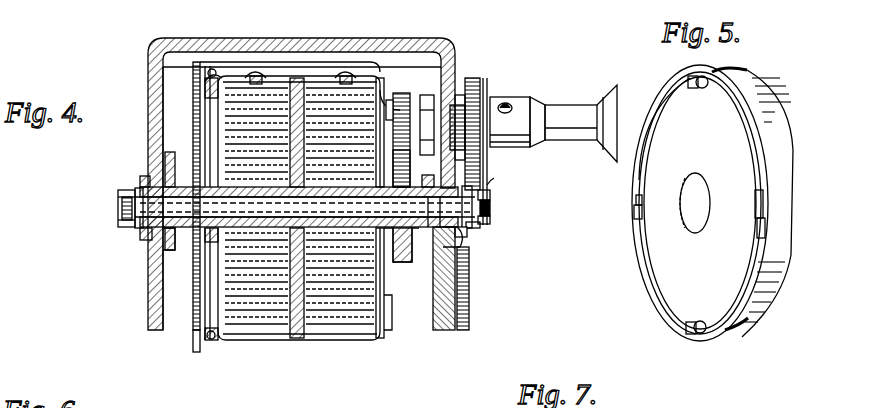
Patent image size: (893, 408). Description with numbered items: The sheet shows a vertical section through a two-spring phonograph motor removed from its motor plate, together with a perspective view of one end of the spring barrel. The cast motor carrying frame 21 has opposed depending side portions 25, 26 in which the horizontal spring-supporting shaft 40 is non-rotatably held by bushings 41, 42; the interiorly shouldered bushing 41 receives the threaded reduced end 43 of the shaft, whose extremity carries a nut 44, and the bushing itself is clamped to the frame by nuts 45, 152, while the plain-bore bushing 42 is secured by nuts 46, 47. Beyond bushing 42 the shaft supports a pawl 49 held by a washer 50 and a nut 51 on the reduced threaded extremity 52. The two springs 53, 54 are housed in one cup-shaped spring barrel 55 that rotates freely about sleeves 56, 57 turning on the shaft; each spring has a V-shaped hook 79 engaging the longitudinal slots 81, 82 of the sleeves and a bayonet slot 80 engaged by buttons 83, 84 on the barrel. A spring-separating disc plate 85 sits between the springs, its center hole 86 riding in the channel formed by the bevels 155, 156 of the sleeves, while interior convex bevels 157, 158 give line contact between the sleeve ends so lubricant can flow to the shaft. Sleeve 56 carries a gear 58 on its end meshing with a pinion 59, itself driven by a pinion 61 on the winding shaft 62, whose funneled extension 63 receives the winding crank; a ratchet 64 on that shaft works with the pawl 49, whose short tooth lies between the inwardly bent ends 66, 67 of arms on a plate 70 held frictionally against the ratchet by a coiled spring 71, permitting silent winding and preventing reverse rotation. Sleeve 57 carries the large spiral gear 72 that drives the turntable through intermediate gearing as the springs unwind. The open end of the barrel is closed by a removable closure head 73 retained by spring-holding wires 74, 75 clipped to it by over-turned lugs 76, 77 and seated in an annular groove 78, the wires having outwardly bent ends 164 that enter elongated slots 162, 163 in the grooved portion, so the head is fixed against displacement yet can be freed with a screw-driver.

In FIG. 4, the motor carrying frame 21 is at (318, 40).
In FIG. 4, the depending side portion 25 is at (153, 118).
In FIG. 4, the depending side portion 26 is at (452, 72).
In FIG. 4, the spring-supporting shaft 40 is at (400, 245).
In FIG. 4, the bushing 41 is at (150, 226).
In FIG. 4, the bushing 42 is at (458, 240).
In FIG. 4, the threaded reduced end 43 is at (133, 224).
In FIG. 4, the nut 44 is at (124, 195).
In FIG. 4, the nut 45 is at (140, 178).
In FIG. 4, the nut 46 is at (466, 232).
In FIG. 4, the nut 47 is at (441, 263).
In FIG. 4, the pawl 49 is at (490, 196).
In FIG. 4, the washer 50 is at (480, 224).
In FIG. 4, the nut 51 is at (488, 224).
In FIG. 4, the reduced threaded extremity 52 is at (492, 207).
In FIG. 4, the spring 53 is at (355, 320).
In FIG. 4, the spring 54 is at (262, 305).
In FIG. 4, the spring barrel 55 is at (333, 342).
In FIG. 4, the sleeve 56 is at (345, 225).
In FIG. 4, the sleeve 57 is at (176, 240).
In FIG. 4, the hub 58 is at (425, 150).
In FIG. 4, the pinion 59 is at (452, 67).
In FIG. 4, the pinion 61 is at (410, 92).
In FIG. 4, the winding shaft 62 is at (500, 117).
In FIG. 4, the funneled extension 63 is at (572, 122).
In FIG. 4, the ratchet 64 is at (480, 82).
In FIG. 4, the inwardly bent end 66 is at (490, 183).
In FIG. 4, the inwardly bent end 67 is at (492, 214).
In FIG. 4, the plate 70 is at (503, 136).
In FIG. 4, the coiled spring 71 is at (522, 136).
In FIG. 4, the spiral gear 72 is at (194, 336).
In FIG. 4, the closure head 73 is at (215, 295).
In FIG. 4, the spring-holding wire 74 is at (216, 80).
In FIG. 5, the spring-holding wire 74 is at (661, 104).
In FIG. 4, the spring-holding wire 75 is at (218, 340).
In FIG. 5, the spring-holding wire 75 is at (658, 298).
In FIG. 4, the over-turned lug 76 is at (205, 95).
In FIG. 5, the over-turned lug 76 is at (702, 78).
In FIG. 4, the over-turned lug 77 is at (211, 344).
In FIG. 5, the over-turned lug 77 is at (694, 334).
In FIG. 4, the annular groove 78 is at (212, 72).
In FIG. 5, the annular groove 78 is at (735, 97).
In FIG. 4, the V-shaped hook 79 is at (243, 167).
In FIG. 4, the bayonet slot 80 is at (272, 82).
In FIG. 4, the longitudinal slot 81 is at (394, 168).
In FIG. 4, the longitudinal slot 82 is at (222, 234).
In FIG. 4, the button 83 is at (346, 80).
In FIG. 4, the button 84 is at (258, 78).
In FIG. 4, the spring-separating disc plate 85 is at (297, 345).
In FIG. 4, the center hole 86 is at (382, 318).
In FIG. 4, the nut 152 is at (170, 166).
In FIG. 4, the bevel 155 is at (360, 270).
In FIG. 4, the bevel 156 is at (305, 270).
In FIG. 4, the convex bevel 157 is at (372, 262).
In FIG. 4, the convex bevel 158 is at (244, 220).
In FIG. 5, the elongated slot 162 is at (758, 224).
In FIG. 5, the elongated slot 163 is at (640, 222).
In FIG. 4, the outwardly bent ends 164 is at (496, 9).
In FIG. 5, the outwardly bent ends 164 is at (758, 197).